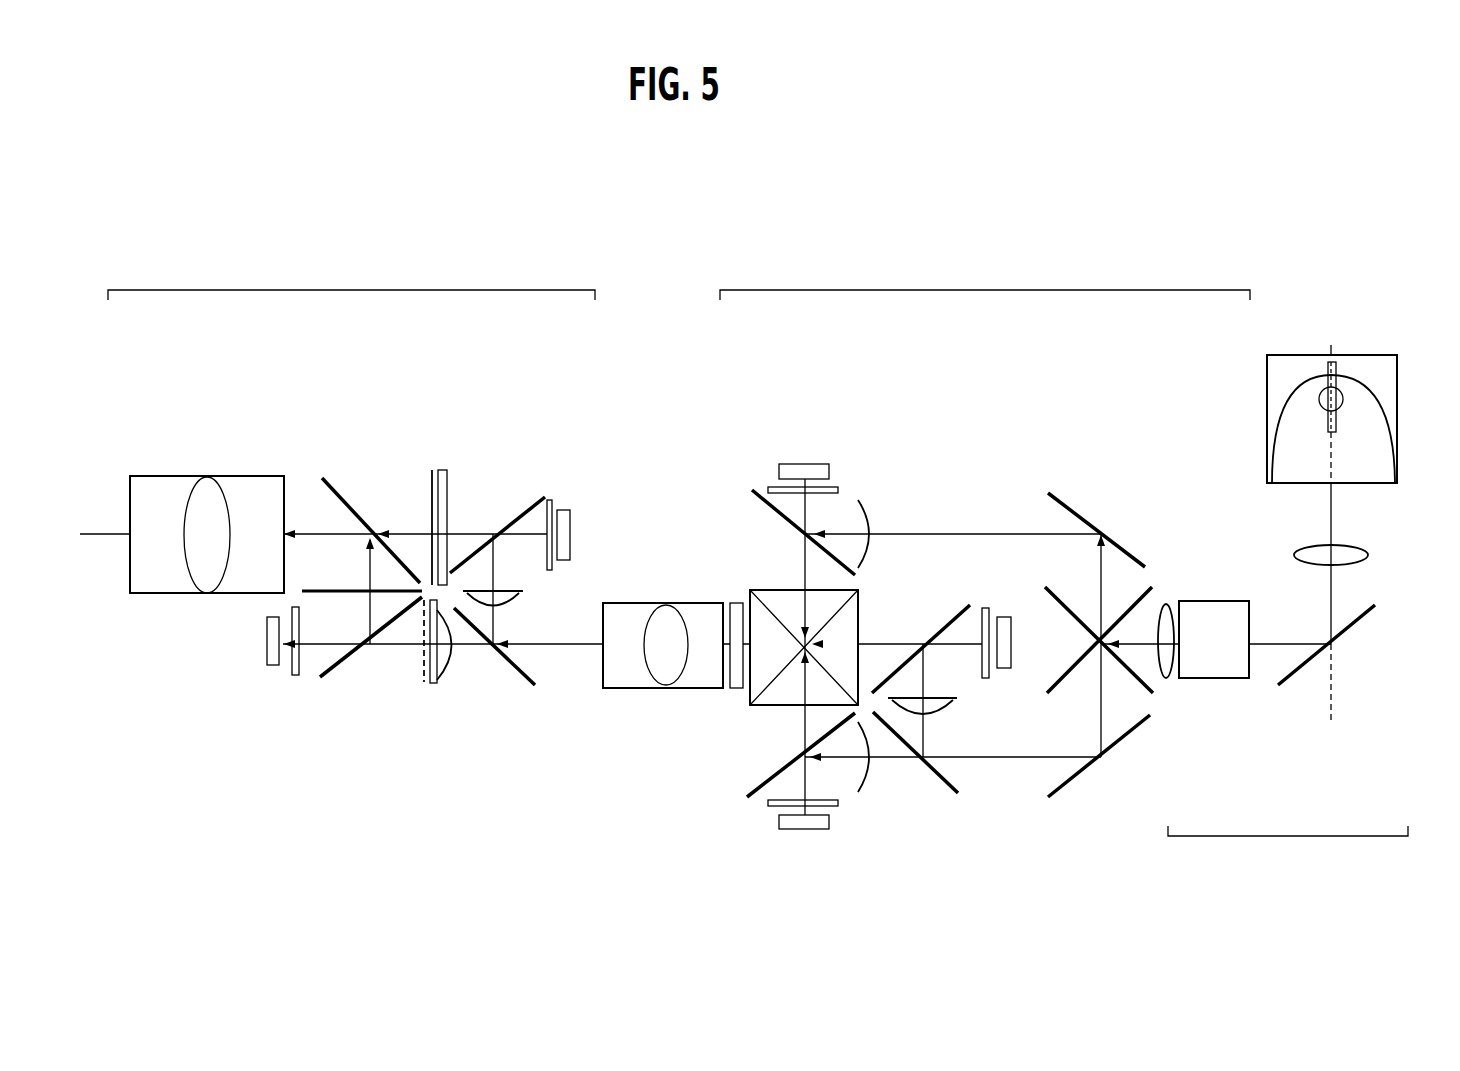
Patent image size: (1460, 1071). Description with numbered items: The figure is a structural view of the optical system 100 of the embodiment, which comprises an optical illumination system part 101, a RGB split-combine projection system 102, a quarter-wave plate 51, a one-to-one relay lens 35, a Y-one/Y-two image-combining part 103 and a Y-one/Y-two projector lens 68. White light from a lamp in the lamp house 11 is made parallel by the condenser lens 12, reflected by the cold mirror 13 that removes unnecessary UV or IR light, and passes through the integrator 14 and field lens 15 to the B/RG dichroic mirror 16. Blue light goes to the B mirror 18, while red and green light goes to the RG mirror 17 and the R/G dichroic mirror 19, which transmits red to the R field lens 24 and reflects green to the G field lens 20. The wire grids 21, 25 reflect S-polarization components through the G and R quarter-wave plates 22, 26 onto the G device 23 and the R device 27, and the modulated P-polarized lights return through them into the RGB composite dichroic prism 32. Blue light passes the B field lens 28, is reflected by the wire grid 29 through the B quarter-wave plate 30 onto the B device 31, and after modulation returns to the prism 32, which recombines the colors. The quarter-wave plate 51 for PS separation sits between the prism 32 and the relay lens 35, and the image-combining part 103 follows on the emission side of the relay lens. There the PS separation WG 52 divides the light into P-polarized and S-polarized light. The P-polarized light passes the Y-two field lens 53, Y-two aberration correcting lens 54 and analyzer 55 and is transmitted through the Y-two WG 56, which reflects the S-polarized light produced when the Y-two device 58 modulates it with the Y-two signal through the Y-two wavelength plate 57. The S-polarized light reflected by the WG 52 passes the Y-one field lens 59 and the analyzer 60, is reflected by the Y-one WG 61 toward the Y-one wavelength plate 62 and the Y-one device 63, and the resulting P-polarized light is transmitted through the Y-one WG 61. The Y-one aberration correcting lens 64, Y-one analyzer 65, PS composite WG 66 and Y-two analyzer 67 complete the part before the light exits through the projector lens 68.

The optical system 100 is at (812, 207).
The optical illumination system part 101 is at (1280, 839).
The RGB split-combine projection system 102 is at (1205, 289).
The Y1Y2 image-combining part 103 is at (547, 289).
The lamp house 11 is at (1398, 390).
The condenser lens 12 is at (1360, 552).
The cold mirror 13 is at (1355, 618).
The integrator 14 is at (1220, 601).
The field lens 15 is at (1170, 605).
The B/RG dichroic mirror 16 is at (1154, 693).
The RG mirror 17 is at (1118, 742).
The B mirror 18 is at (1104, 536).
The R/G dichroic mirror 19 is at (956, 790).
The G field lens 20 is at (932, 712).
The wire grid 21 is at (946, 630).
The G quarter-wave plate 22 is at (986, 606).
The G device 23 is at (1003, 669).
The R field lens 24 is at (873, 781).
The wire grid 25 is at (748, 798).
The R quarter-wave plate 26 is at (832, 806).
The R device 27 is at (800, 830).
The B field lens 28 is at (871, 520).
The wire grid 29 is at (754, 492).
The B quarter-wave plate 30 is at (836, 488).
The B device 31 is at (806, 464).
The RGB composite dichroic prism 32 is at (750, 700).
The 1:1 relay lens 35 is at (620, 690).
The quarter-wave plate 51 is at (737, 602).
The PS separation WG generator 52 is at (533, 688).
The Y2 field lens 53 is at (452, 665).
The Y2 aberration correcting lens 54 is at (434, 684).
The analyzer 55 is at (422, 665).
The Y2 WG 56 is at (324, 680).
The Y2 wavelength plate 57 is at (295, 677).
The Y2 second modulation light generator device 58 is at (266, 645).
The Y1 field lens 59 is at (516, 607).
The analyzer 60 is at (505, 592).
The Y1 WG 61 is at (540, 500).
The Y1 wavelength plate 62 is at (553, 503).
The Y1 first modulation light generator device 63 is at (572, 530).
The Y1 aberration correcting lens 64 is at (445, 470).
The Y1 analyzer 65 is at (430, 470).
The PS composite WG 66 is at (326, 480).
The Y2 analyzer 67 is at (302, 592).
The Y1Y2 projector lens 68 is at (178, 476).